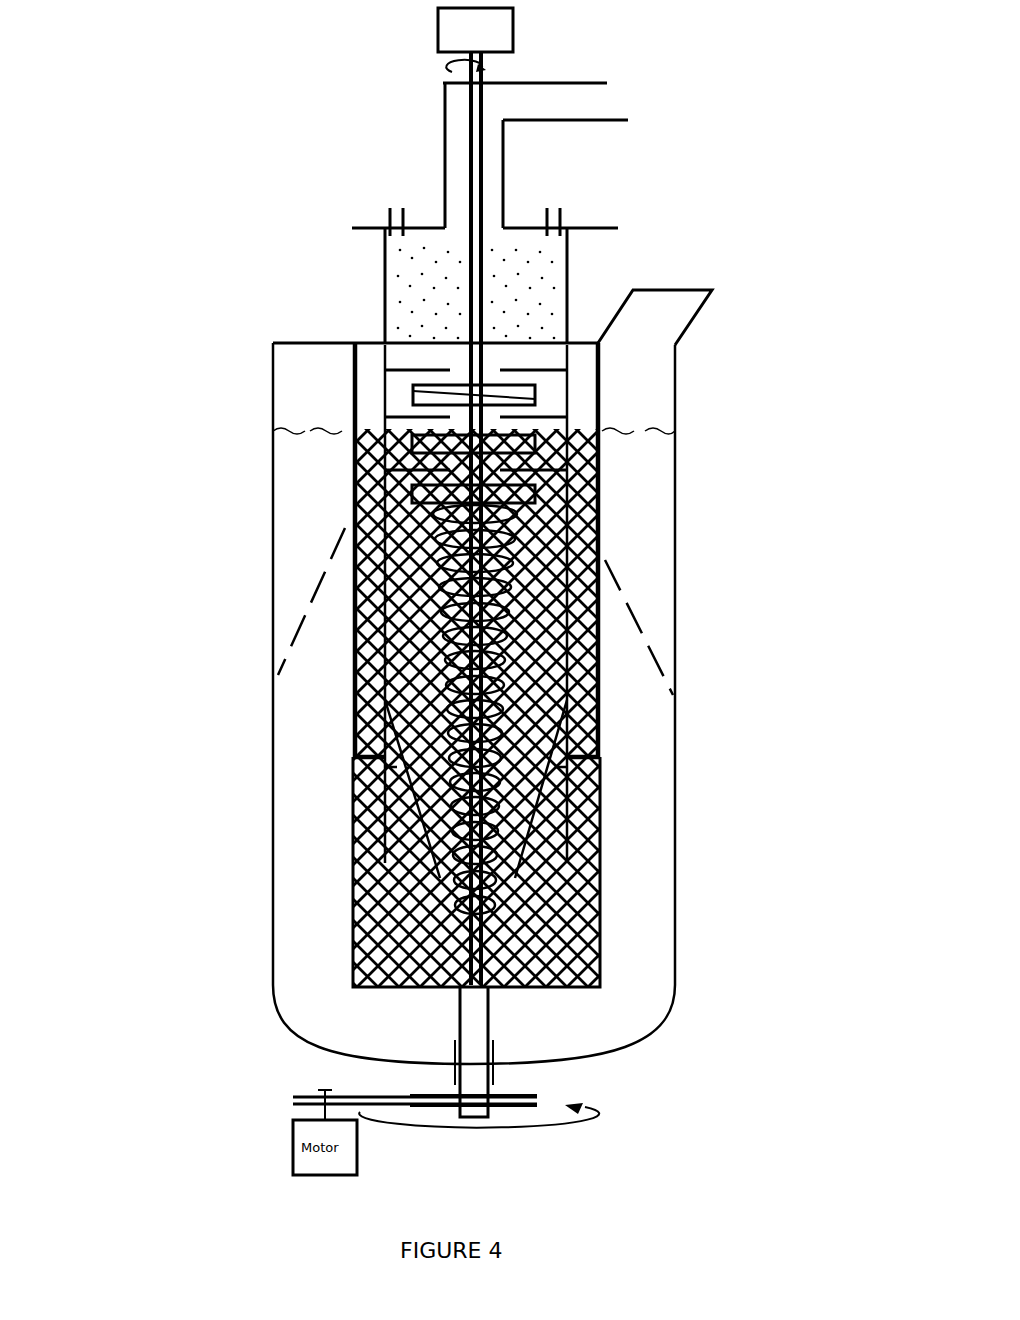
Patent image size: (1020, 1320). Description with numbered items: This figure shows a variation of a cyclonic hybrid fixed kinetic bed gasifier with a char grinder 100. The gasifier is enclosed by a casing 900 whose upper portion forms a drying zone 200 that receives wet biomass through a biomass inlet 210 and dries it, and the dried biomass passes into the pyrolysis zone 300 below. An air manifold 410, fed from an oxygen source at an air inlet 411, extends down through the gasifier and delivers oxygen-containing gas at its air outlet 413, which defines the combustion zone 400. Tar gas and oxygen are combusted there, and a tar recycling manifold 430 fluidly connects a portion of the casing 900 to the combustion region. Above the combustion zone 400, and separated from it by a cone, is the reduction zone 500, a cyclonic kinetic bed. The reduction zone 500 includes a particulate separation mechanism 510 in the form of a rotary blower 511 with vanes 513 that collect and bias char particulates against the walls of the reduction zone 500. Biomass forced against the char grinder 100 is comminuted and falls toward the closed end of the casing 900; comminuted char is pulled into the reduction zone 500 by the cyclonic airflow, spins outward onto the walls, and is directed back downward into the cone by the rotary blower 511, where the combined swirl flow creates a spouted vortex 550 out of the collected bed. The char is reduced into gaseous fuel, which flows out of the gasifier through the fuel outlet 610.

The char grinder 100 is at (355, 477).
The drying zone 200 is at (308, 508).
The biomass inlet 210 is at (662, 272).
The pyrolysis zone 300 is at (312, 902).
The combustion zone 400 is at (410, 868).
The air manifold 410 is at (405, 272).
The air inlet 411 is at (548, 212).
The air outlet 413 is at (600, 745).
The tar recycling manifold 430 is at (600, 770).
The reduction zone 500 is at (418, 675).
The particulate separation mechanism 510 is at (347, 461).
The rotary blower 511 is at (388, 388).
The vanes 513 is at (353, 582).
The spouted vortex 550 is at (600, 590).
The fuel outlet 610 is at (668, 75).
The casing 900 is at (678, 497).